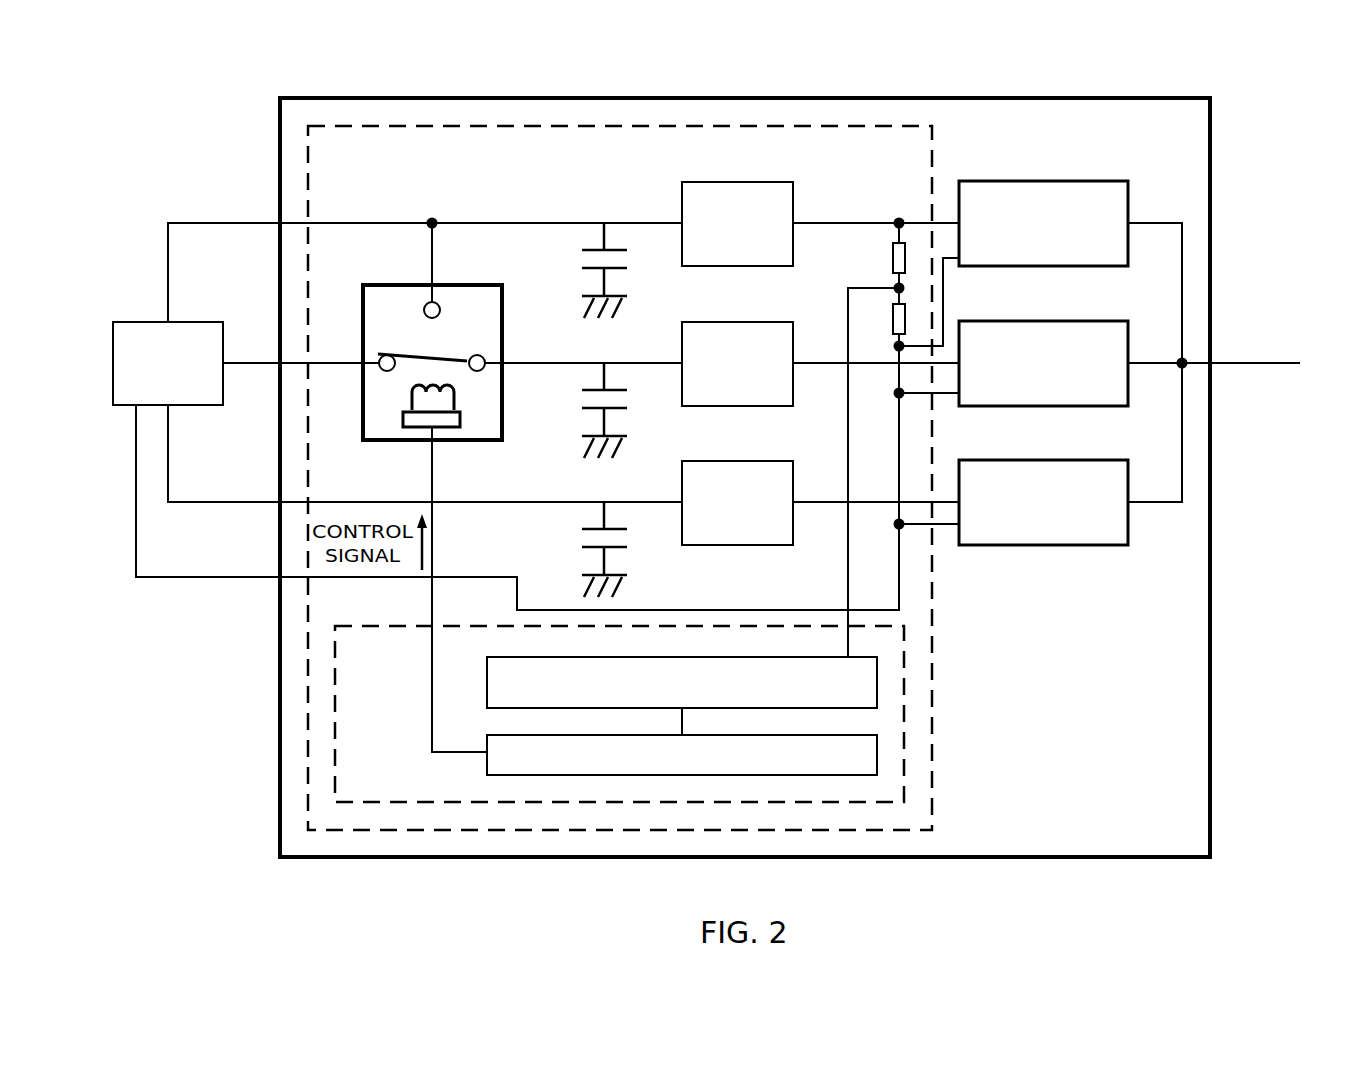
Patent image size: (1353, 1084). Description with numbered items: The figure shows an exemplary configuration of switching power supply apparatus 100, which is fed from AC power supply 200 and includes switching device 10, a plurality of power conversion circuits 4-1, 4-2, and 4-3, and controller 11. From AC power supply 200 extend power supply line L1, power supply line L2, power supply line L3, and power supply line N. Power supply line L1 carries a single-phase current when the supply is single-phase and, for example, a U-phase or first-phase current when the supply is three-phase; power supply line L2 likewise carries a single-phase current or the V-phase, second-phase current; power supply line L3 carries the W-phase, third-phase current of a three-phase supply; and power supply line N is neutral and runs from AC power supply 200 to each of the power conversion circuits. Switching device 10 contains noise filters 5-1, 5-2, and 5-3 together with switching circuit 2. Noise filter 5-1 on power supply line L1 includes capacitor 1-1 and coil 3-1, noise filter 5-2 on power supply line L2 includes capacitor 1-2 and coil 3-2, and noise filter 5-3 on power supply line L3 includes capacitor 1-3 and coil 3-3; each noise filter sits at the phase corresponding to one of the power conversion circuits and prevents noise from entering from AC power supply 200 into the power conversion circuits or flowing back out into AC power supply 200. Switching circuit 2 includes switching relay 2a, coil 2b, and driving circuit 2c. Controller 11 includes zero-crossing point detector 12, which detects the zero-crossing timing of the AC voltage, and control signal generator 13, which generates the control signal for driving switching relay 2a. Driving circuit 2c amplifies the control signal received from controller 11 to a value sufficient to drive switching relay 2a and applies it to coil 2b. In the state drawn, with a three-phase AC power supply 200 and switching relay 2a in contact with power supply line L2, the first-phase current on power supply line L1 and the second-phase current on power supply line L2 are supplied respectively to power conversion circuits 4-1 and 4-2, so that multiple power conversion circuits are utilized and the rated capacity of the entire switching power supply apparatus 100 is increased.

The switching power supply apparatus 100 is at (1137, 97).
The switching device 10 is at (820, 125).
The AC power supply 200 is at (152, 320).
The switching circuit 2 is at (407, 342).
The switching relay 2a is at (413, 355).
The coil 2b is at (410, 388).
The driving circuit 2c is at (405, 417).
The capacitor 1-1 is at (623, 268).
The capacitor 1-2 is at (623, 408).
The capacitor 1-3 is at (623, 547).
The noise filter 5-1 is at (587, 270).
The noise filter 5-2 is at (587, 410).
The noise filter 5-3 is at (587, 549).
The coil 3-1 is at (718, 266).
The coil 3-2 is at (718, 406).
The coil 3-3 is at (718, 545).
The power conversion circuit 4-1 is at (1055, 266).
The power conversion circuit 4-2 is at (1055, 406).
The power conversion circuit 4-3 is at (1055, 545).
The controller 11 is at (378, 626).
The zero-crossing point detector 12 is at (487, 687).
The control signal generator 13 is at (487, 769).
The power supply line L1 is at (262, 222).
The power supply line L2 is at (262, 362).
The power supply line L3 is at (262, 501).
The power supply line N is at (262, 576).